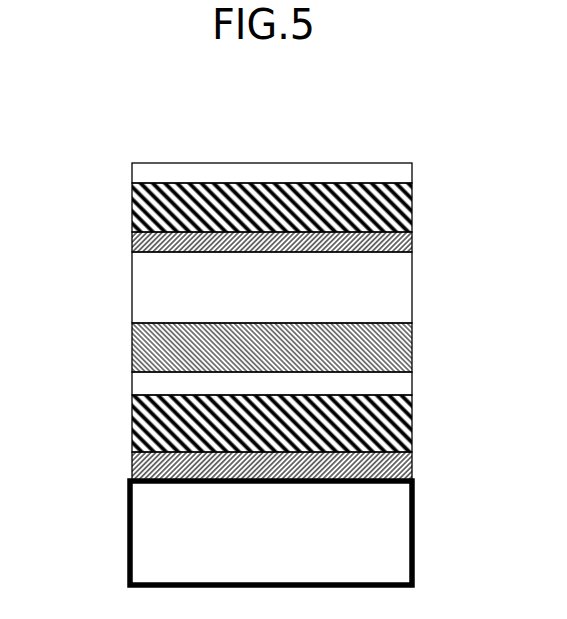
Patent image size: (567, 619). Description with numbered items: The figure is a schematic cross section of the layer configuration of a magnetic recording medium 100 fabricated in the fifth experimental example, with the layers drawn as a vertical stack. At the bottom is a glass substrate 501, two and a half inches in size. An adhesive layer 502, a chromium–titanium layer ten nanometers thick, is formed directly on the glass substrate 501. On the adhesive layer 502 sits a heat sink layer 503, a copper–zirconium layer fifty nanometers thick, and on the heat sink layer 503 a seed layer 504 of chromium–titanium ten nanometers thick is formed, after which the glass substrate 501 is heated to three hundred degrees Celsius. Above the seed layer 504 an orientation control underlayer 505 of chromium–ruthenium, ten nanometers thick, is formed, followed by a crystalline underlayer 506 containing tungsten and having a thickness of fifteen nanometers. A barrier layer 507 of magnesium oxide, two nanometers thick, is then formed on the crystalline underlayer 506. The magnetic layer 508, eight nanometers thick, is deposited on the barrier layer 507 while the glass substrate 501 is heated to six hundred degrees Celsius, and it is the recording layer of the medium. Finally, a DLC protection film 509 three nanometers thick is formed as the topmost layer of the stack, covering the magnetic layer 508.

The organic electroluminescent element 100 is at (78, 145).
The glass substrate 501 is at (412, 534).
The adhesive layer 502 is at (406, 465).
The heat sink layer 503 is at (406, 419).
The seed layer 504 is at (406, 382).
The orientation control underlayer 505 is at (406, 345).
The crystalline underlayer 506 is at (406, 289).
The barrier layer 507 is at (406, 242).
The magnetic layer 508 is at (406, 207).
The DLC protection film 509 is at (406, 172).